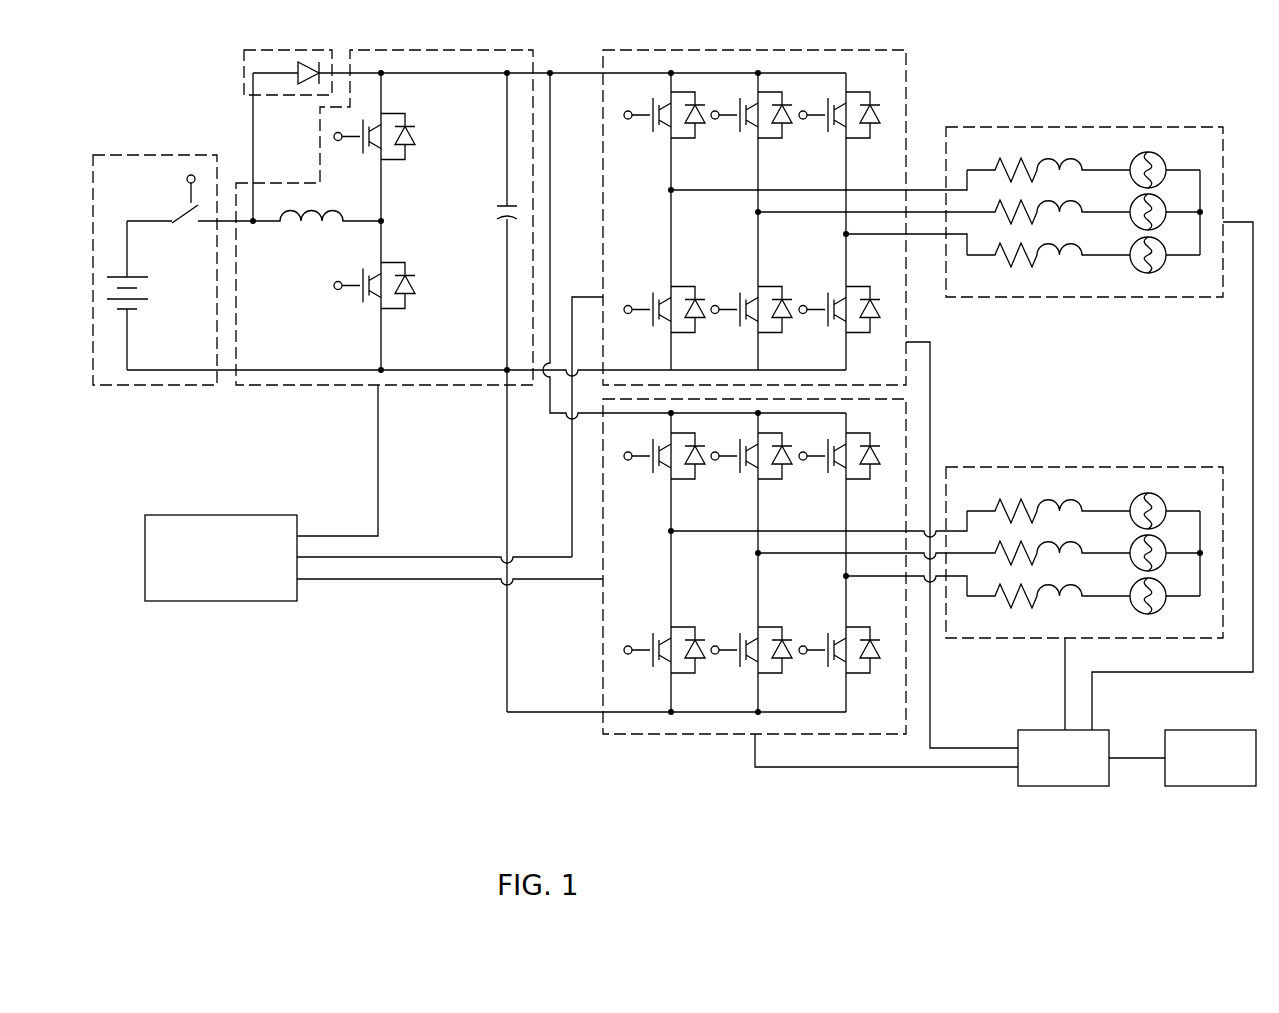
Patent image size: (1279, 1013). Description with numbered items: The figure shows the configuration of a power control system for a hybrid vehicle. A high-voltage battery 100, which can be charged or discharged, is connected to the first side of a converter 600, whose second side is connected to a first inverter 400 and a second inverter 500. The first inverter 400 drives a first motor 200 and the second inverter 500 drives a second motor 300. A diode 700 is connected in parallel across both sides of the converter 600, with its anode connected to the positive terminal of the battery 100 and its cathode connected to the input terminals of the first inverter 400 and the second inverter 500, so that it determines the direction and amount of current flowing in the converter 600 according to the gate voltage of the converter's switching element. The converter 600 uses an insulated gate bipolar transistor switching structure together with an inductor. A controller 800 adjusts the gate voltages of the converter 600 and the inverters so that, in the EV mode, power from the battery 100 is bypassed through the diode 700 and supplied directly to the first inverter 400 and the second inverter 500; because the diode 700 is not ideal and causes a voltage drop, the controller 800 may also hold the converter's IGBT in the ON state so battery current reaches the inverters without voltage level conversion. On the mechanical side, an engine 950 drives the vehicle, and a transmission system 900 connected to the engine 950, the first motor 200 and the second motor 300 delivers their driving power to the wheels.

The high-voltage battery 100 is at (143, 386).
The first motor 200 is at (1120, 127).
The second motor 300 is at (1083, 467).
The first inverter 400 is at (907, 73).
The second inverter 500 is at (602, 727).
The converter 600 is at (300, 386).
The diode 700 is at (244, 73).
The controller 800 is at (237, 602).
The transmission system 900 is at (1065, 787).
The engine 950 is at (1210, 787).